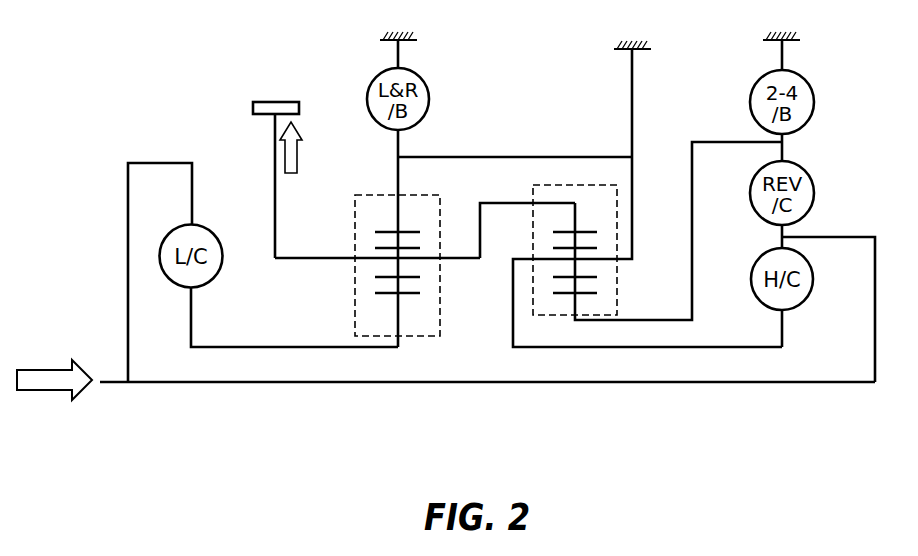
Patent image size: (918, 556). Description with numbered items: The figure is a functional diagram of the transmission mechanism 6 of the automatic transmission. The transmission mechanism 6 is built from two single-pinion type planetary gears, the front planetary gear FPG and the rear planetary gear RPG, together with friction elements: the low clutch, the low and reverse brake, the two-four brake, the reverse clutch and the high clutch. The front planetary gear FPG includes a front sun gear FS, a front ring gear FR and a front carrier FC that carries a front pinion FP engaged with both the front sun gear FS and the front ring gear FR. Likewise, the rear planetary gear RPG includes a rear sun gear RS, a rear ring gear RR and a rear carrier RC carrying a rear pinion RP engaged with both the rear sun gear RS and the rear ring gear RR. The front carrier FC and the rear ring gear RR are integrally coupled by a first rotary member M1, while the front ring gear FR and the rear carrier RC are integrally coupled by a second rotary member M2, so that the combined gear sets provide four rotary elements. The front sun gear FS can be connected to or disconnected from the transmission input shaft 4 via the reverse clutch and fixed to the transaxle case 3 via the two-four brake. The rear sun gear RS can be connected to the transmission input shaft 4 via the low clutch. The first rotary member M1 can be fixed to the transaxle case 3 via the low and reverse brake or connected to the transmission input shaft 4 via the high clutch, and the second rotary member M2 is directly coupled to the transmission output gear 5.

The transaxle case 3 is at (402, 43).
The transmission input shaft 4 is at (390, 384).
The transmission output gear 5 is at (280, 102).
The transmission mechanism 6 is at (163, 61).
The first rotary member M1 is at (477, 157).
The second rotary member M2 is at (483, 227).
The rear planetary gear RPG is at (394, 244).
The rear ring gear RR is at (387, 240).
The rear pinion RP is at (385, 277).
The rear carrier RC is at (413, 260).
The rear sun gear RS is at (405, 284).
The front planetary gear FPG is at (657, 259).
The front ring gear FR is at (585, 239).
The front carrier FC is at (588, 262).
The front pinion FP is at (562, 278).
The front sun gear FS is at (583, 287).